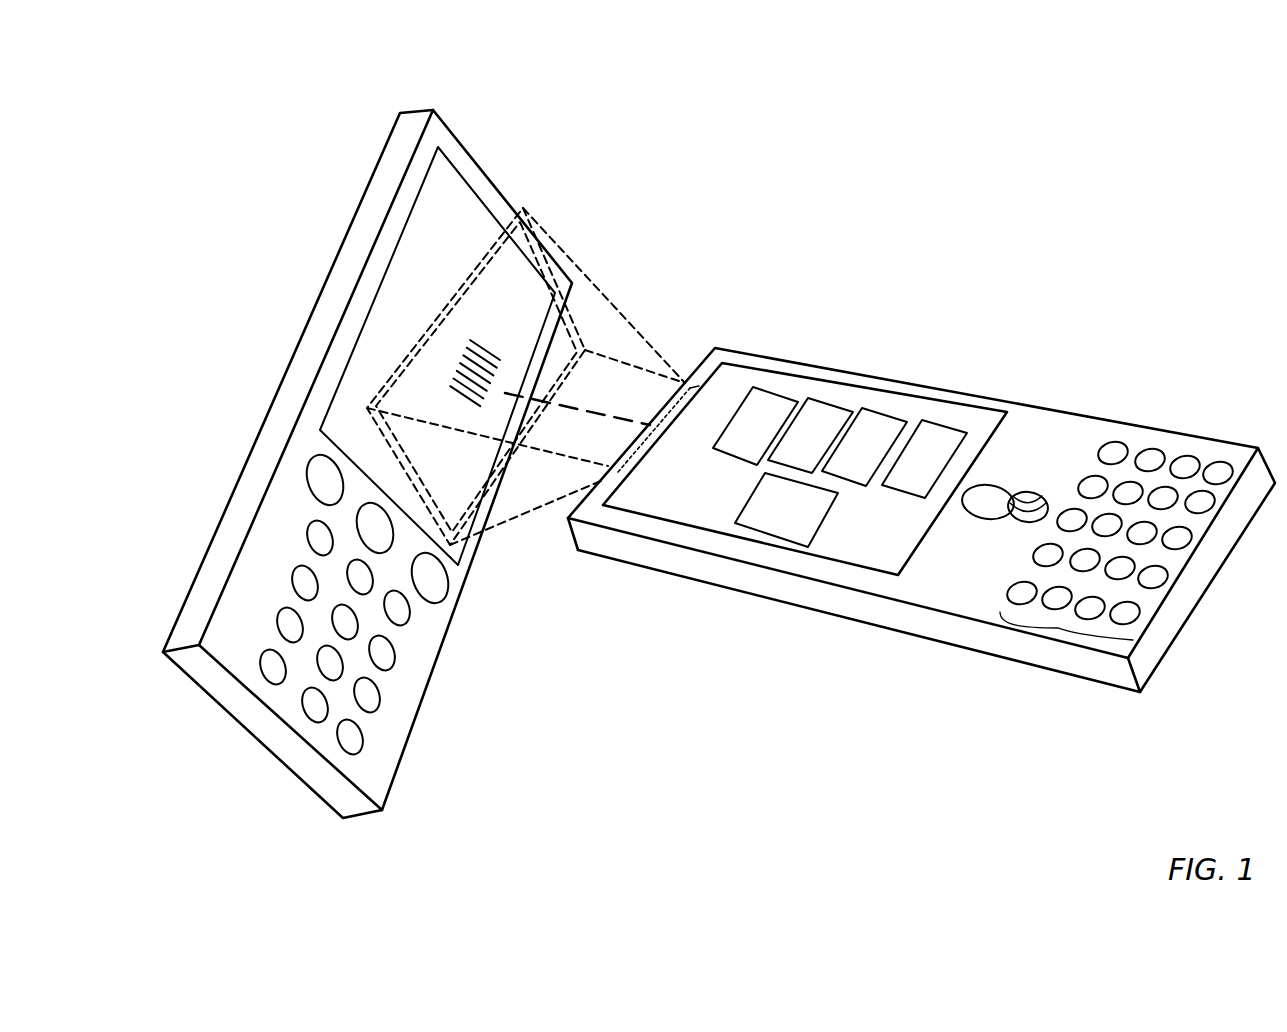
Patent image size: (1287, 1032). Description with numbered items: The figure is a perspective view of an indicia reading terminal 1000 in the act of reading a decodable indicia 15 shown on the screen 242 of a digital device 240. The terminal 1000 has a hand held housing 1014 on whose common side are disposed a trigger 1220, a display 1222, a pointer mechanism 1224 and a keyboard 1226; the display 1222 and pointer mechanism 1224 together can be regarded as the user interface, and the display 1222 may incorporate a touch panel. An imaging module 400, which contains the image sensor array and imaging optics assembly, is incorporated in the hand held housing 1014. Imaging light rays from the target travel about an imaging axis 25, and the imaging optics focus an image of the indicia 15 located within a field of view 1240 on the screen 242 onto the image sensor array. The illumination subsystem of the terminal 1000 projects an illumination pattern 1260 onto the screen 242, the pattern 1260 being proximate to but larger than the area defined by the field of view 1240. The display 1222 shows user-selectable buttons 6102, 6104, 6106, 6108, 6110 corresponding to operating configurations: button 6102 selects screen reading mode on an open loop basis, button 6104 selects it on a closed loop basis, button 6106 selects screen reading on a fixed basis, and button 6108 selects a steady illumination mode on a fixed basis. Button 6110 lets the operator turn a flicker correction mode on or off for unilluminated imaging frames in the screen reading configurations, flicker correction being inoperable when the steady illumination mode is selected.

The indicia 15 is at (493, 350).
The imaging axis 25 is at (588, 410).
The digital device 240 is at (428, 682).
The screen 242 is at (397, 247).
The imaging module 400 is at (688, 385).
The indicia reading terminal 1000 is at (921, 469).
The hand held housing 1014 is at (1057, 435).
The trigger 1220 is at (967, 520).
The display 1222 is at (873, 388).
The pointer mechanism 1224 is at (1013, 520).
The keyboard 1226 is at (1062, 628).
The field of view 1240 is at (480, 277).
The illumination pattern 1260 is at (463, 280).
The button 6102 is at (762, 388).
The button 6104 is at (825, 400).
The button 6106 is at (892, 417).
The button 6108 is at (945, 423).
The button 6110 is at (773, 533).